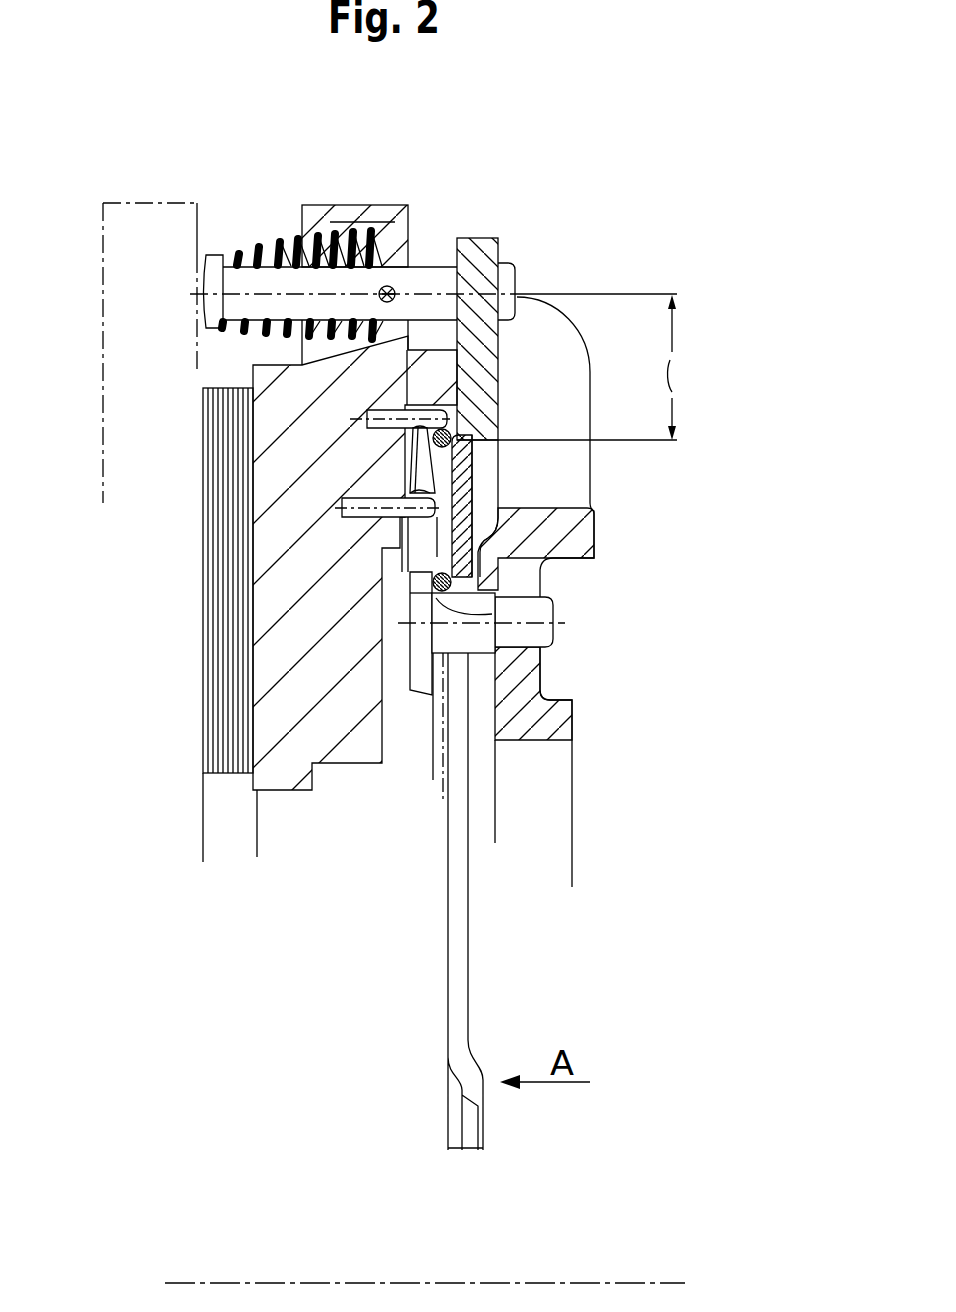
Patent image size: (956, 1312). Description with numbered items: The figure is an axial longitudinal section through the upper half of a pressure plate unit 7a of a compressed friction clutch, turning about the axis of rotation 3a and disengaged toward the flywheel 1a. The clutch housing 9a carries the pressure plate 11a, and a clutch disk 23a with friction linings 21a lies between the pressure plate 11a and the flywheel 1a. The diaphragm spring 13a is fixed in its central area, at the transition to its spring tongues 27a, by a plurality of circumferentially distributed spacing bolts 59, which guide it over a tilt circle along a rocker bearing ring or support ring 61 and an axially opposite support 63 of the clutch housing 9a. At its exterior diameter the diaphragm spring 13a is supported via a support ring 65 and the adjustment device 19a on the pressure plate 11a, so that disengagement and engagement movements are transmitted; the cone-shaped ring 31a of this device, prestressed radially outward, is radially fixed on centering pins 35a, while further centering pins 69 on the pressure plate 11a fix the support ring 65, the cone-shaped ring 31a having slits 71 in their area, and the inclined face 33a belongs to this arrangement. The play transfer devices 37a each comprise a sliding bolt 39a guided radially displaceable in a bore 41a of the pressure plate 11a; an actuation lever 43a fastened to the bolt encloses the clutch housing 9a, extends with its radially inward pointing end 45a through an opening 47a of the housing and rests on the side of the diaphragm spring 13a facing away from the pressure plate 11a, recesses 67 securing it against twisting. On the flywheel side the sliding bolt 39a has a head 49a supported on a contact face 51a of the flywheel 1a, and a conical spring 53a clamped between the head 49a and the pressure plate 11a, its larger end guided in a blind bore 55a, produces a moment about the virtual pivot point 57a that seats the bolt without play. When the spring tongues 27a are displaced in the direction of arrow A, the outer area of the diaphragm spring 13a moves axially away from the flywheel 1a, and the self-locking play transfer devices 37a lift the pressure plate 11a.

The flywheel 1a is at (108, 383).
The axis of rotation 3a is at (329, 1283).
The pressure plate unit 7a is at (615, 203).
The clutch housing 9a is at (555, 725).
The pressure plate 11a is at (356, 752).
The diaphragm spring 13a is at (510, 523).
The adjustment device 19a is at (400, 467).
The friction linings 21a is at (222, 701).
The clutch disk 23a is at (196, 828).
The spring tongues 27a is at (470, 958).
The cone-shaped ring 31a is at (415, 494).
The inclined face 33a is at (465, 470).
The centering pins 35a is at (345, 508).
The play transfer devices 37a is at (463, 226).
The sliding bolt 39a is at (420, 280).
The bore 41a is at (383, 286).
The actuation lever 43a is at (482, 245).
The radially inward pointing end 45a is at (495, 462).
The opening 47a is at (518, 356).
The head 49a is at (215, 275).
The contact face 51a is at (199, 232).
The conical spring 53a is at (247, 262).
The blind bore 55a is at (300, 367).
The virtual pivot point 57a is at (380, 262).
The spacing bolts 59 is at (517, 636).
The support ring 61 is at (515, 608).
The support 63 is at (480, 580).
The support ring 65 is at (456, 432).
The recesses 67 is at (470, 420).
The centering pins 69 is at (367, 411).
The slits 71 is at (412, 432).